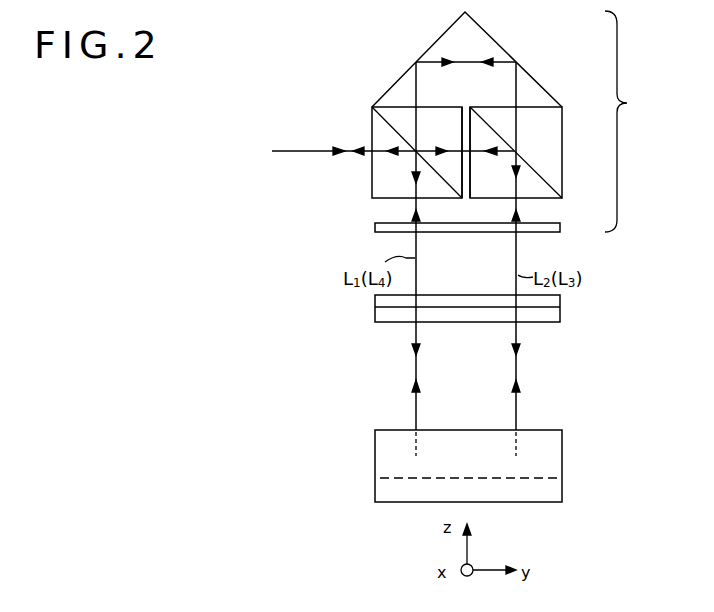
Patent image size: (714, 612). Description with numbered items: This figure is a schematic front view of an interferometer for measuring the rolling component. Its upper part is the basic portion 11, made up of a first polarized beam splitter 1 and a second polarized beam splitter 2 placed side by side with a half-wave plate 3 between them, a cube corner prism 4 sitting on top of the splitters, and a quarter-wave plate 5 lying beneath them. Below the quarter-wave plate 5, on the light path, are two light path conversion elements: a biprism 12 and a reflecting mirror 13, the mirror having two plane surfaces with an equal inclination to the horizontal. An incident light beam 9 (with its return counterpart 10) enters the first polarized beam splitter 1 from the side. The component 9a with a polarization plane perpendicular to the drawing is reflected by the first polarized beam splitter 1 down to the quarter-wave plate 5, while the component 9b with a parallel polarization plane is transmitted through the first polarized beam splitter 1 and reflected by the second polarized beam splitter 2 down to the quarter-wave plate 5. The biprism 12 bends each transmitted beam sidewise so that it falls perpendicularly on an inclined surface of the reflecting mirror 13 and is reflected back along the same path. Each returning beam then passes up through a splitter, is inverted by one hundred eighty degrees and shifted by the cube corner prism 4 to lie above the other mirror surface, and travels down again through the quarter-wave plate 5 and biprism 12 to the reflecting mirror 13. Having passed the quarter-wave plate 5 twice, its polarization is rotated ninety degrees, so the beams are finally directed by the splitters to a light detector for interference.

The first polarized beam splitter 1 is at (378, 128).
The second polarized beam splitter 2 is at (555, 136).
The half-wave plate 3 is at (466, 116).
The cube corner prism 4 is at (438, 48).
The quarter-wave plate 5 is at (398, 228).
The incident light beam 9 is at (390, 106).
The reflected light beam 10 is at (390, 106).
The first split beam 9a is at (414, 163).
The light beam 9b is at (518, 162).
The basic portion 11 is at (634, 121).
The biprism 12 is at (378, 302).
The reflecting mirror 13 is at (380, 456).